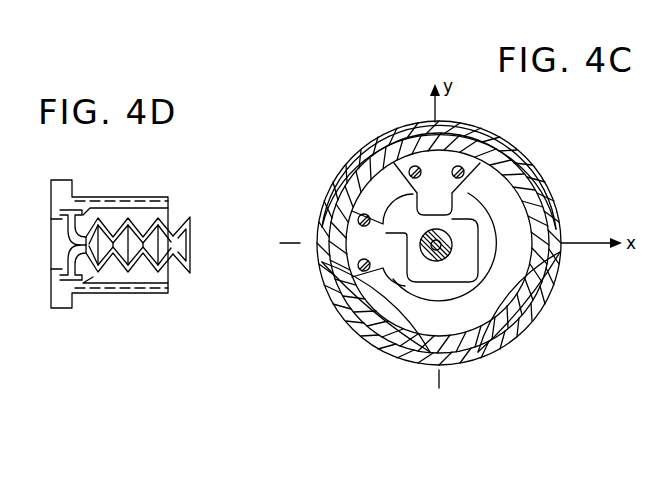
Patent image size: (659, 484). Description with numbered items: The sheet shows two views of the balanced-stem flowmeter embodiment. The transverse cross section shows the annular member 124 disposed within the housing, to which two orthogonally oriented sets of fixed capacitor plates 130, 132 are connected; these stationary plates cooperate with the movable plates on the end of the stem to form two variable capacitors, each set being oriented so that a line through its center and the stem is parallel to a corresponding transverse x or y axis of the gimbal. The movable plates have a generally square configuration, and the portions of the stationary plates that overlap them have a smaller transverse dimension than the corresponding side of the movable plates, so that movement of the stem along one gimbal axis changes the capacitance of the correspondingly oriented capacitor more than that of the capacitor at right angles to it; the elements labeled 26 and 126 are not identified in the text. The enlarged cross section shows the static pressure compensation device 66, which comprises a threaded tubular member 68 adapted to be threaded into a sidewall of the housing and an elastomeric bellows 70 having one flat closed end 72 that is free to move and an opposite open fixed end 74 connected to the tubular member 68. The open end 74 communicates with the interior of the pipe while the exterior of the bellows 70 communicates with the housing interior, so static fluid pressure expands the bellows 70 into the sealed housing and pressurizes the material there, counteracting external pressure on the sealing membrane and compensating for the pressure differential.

In FIG. 4C, the fastener 26 is at (441, 239).
In FIG. 4D, the static pressure compensation device 66 is at (110, 312).
In FIG. 4D, the threaded tubular member 68 is at (153, 295).
In FIG. 4D, the elastomeric bellows 70 is at (140, 223).
In FIG. 4D, the flat closed end 72 is at (190, 236).
In FIG. 4D, the open fixed end 74 is at (68, 246).
In FIG. 4C, the annular member 124 is at (470, 320).
In FIG. 4C, the body 126 is at (470, 270).
In FIG. 4C, the fixed capacitor plates 130 is at (447, 212).
In FIG. 4C, the fixed capacitor plates 132 is at (392, 318).